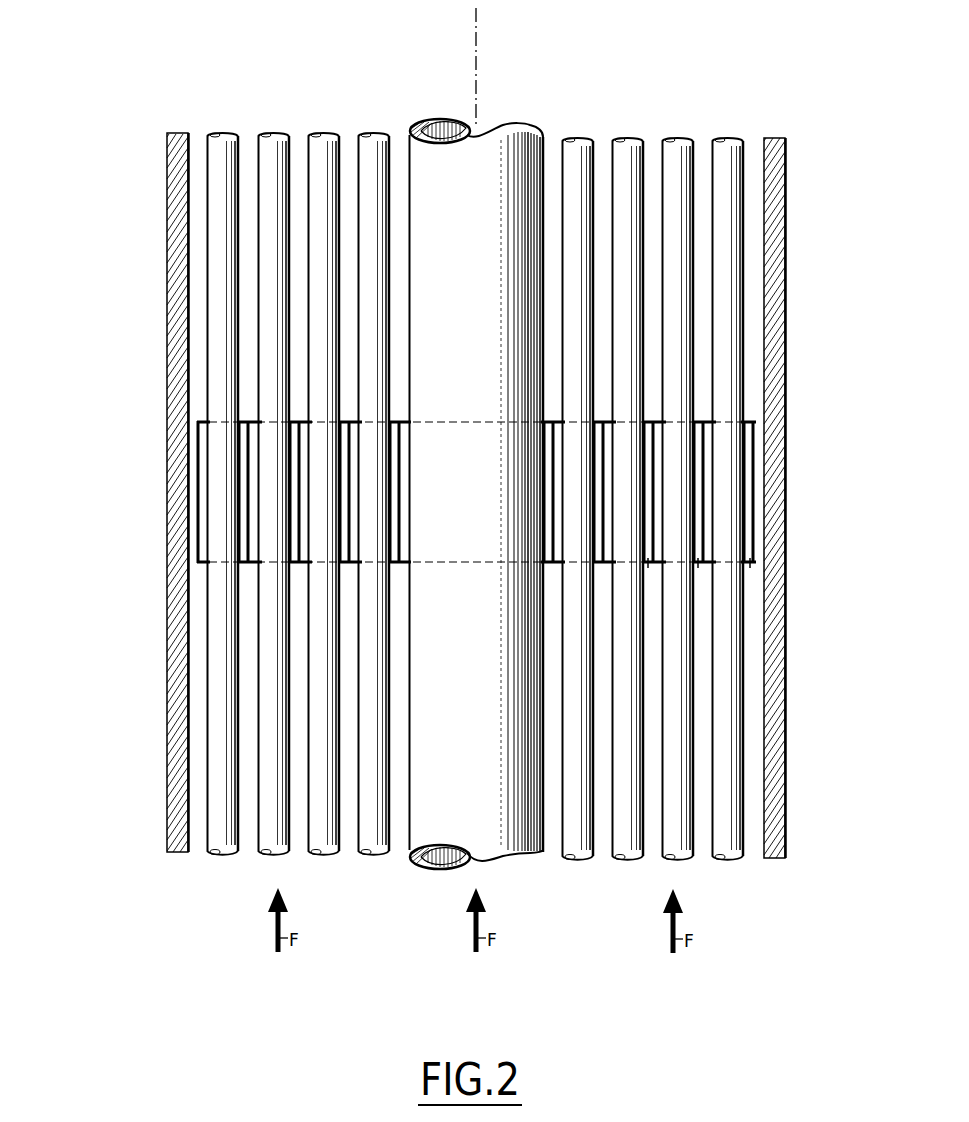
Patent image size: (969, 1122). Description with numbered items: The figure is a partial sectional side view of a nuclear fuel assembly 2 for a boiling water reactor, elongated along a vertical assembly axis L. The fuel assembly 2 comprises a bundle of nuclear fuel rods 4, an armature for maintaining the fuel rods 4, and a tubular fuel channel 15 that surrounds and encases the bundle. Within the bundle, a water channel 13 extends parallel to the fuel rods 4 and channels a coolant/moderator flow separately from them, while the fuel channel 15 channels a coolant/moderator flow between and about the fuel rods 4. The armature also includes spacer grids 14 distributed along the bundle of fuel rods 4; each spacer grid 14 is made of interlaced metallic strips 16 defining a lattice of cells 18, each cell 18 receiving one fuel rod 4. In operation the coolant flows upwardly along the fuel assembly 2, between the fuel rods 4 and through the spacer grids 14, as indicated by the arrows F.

The nuclear fuel assembly 2 is at (187, 98).
The nuclear fuel rods 4 is at (367, 133).
The water channel 13 is at (500, 133).
The spacer grid 14 is at (186, 419).
The fuel channel 15 is at (160, 227).
The interlaced metallic strips 16 is at (298, 533).
The cells 18 is at (648, 565).